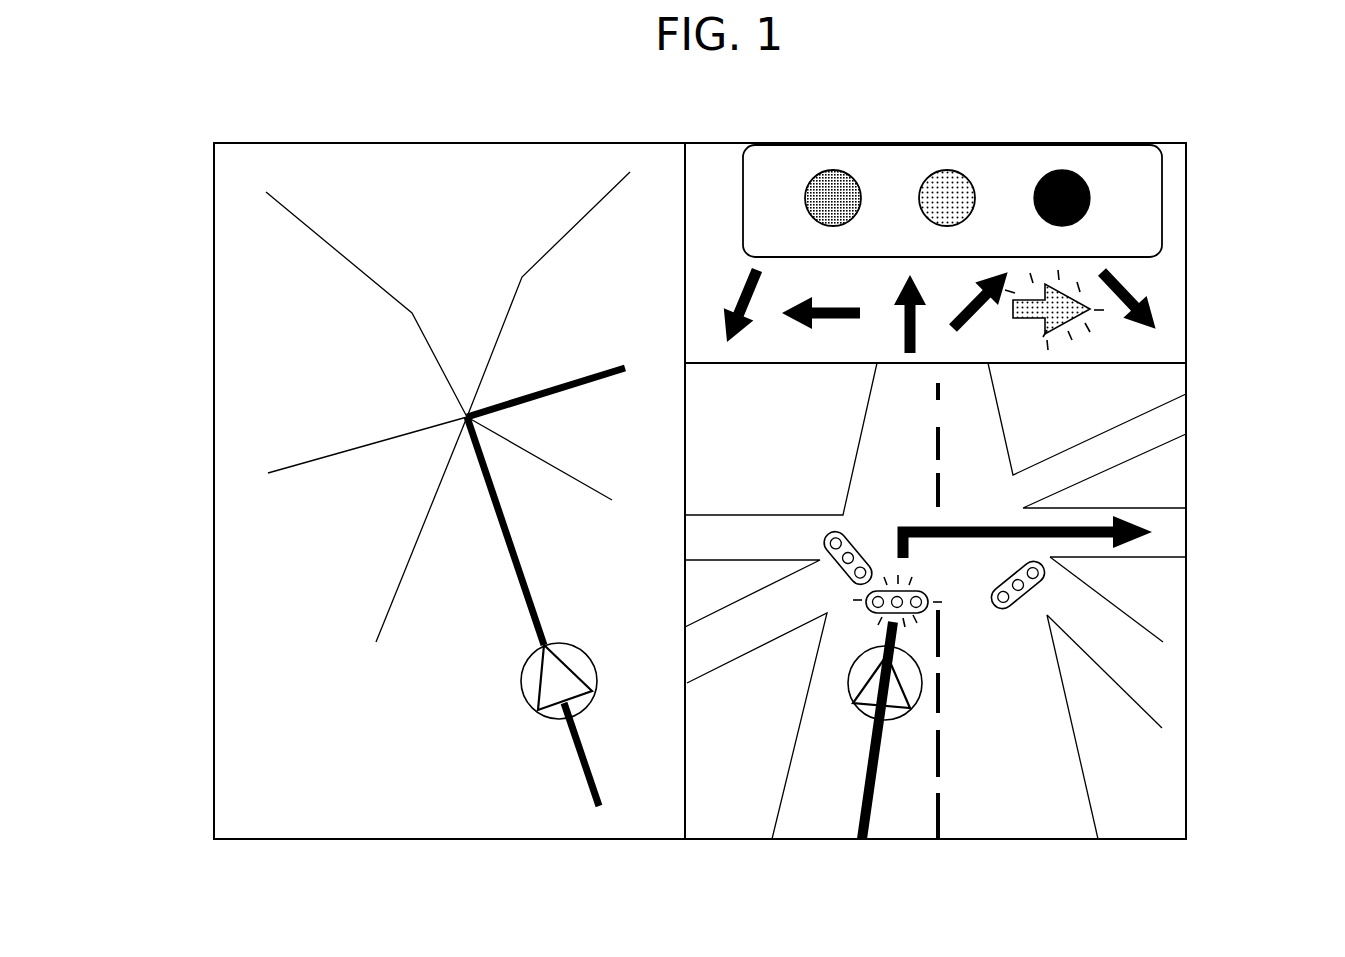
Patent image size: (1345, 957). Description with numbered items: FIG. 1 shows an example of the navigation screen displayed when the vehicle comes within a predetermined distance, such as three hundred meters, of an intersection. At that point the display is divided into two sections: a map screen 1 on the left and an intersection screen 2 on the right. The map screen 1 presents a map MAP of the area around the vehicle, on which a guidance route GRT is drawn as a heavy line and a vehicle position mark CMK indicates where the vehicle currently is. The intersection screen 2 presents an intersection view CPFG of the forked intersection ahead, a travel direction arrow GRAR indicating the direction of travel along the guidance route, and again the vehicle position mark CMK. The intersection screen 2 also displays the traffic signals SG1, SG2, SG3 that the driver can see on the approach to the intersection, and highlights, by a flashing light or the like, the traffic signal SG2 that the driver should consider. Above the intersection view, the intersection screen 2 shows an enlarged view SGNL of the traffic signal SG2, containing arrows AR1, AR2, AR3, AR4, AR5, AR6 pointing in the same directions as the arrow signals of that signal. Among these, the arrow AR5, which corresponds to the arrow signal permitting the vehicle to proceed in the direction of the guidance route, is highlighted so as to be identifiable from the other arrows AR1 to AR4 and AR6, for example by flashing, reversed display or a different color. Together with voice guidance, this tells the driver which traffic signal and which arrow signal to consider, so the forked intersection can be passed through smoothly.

The map screen 1 is at (429, 839).
The intersection screen 2 is at (1003, 839).
The map MAP is at (240, 682).
The vehicle position mark CMK is at (520, 696).
The guidance route GRT is at (581, 779).
The enlarged view of the traffic signal SGNL is at (1177, 250).
The arrow AR1 is at (745, 287).
The arrow AR2 is at (840, 308).
The arrow AR3 is at (903, 343).
The arrow AR4 is at (958, 312).
The arrow AR5 is at (1027, 320).
The arrow AR6 is at (1115, 305).
The travel direction arrow GRAR is at (1095, 512).
The intersection view CPFG is at (1178, 618).
The traffic signal SG1 is at (855, 540).
The traffic signal SG2 is at (925, 590).
The traffic signal SG3 is at (1016, 608).